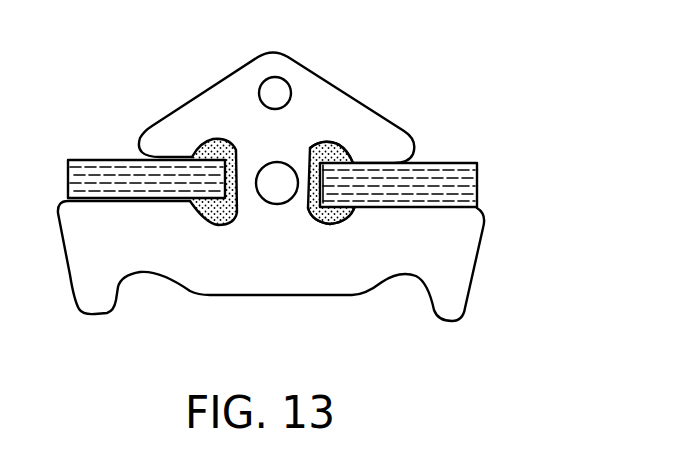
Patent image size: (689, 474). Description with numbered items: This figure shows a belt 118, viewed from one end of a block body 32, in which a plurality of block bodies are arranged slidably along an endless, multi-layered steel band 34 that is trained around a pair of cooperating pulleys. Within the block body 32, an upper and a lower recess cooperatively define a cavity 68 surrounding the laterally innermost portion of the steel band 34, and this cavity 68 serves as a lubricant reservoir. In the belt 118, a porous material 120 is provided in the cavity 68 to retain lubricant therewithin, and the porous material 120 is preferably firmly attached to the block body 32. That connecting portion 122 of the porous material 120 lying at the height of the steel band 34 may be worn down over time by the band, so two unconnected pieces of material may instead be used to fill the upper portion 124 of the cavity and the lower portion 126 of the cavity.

The block body 32 is at (303, 82).
The steel band 34 is at (455, 164).
The cavity 68 is at (327, 204).
The belt 118 is at (445, 112).
The porous material 120 is at (328, 140).
The connecting portion of porous material 122 is at (305, 193).
The upper portion of the cavity 124 is at (352, 142).
The lower portion of the cavity 126 is at (356, 232).